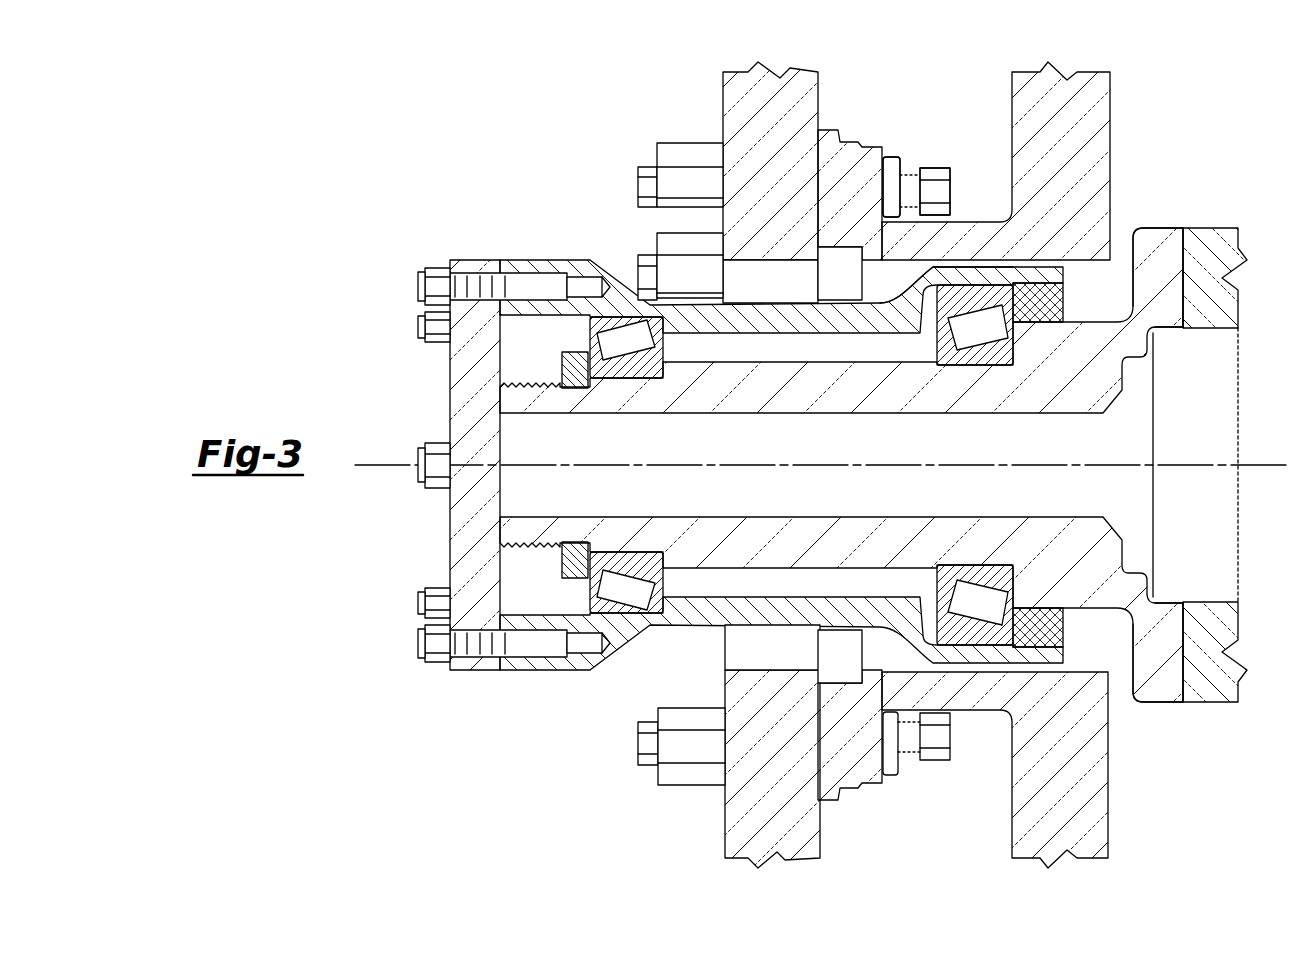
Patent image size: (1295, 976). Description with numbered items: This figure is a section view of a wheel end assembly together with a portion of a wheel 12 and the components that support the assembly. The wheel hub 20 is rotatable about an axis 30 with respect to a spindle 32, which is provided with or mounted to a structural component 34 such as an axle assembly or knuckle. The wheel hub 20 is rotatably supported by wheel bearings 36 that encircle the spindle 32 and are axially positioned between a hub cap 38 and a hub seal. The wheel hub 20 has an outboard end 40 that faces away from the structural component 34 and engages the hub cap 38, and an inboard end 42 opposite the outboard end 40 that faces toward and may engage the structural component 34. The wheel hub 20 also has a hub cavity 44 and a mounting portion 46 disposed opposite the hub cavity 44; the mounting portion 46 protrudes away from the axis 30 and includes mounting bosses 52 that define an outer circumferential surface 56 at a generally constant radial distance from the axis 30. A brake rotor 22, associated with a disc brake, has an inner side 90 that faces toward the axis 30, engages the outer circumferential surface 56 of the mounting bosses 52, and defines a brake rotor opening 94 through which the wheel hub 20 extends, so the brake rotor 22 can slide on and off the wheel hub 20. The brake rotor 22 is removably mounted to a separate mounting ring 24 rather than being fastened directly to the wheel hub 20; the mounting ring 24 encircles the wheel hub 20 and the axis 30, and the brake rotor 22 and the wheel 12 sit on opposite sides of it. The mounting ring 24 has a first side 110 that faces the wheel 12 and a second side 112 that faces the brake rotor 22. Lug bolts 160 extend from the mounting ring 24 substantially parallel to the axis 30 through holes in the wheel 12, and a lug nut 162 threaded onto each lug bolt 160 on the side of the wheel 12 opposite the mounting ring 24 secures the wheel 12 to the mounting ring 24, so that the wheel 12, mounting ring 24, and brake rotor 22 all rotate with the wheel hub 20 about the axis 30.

The wheel 12 is at (803, 72).
The wheel hub 20 is at (535, 260).
The brake rotor 22 is at (1087, 72).
The mounting ring 24 is at (866, 145).
The axis 30 is at (400, 462).
The spindle 32 is at (1155, 228).
The structural component 34 is at (1212, 228).
The wheel bearing 36 is at (618, 380).
The hub cap 38 is at (450, 403).
The outboard end 40 is at (490, 668).
The inboard end 42 is at (1105, 660).
The hub cavity 44 is at (522, 568).
The mounting portion 46 is at (912, 258).
The mounting boss 52 is at (935, 191).
The outer circumferential surface 56 is at (891, 187).
The inner side 90 is at (1000, 262).
The brake rotor opening 94 is at (1050, 263).
The first side 110 is at (810, 760).
The second side 112 is at (920, 773).
The lug bolt 160 is at (638, 268).
The lug nut 162 is at (660, 240).